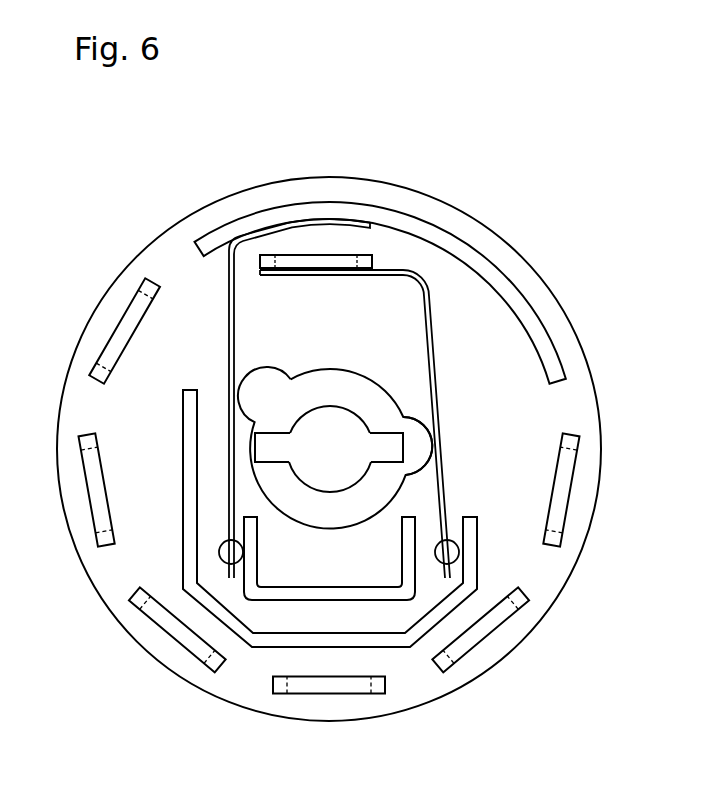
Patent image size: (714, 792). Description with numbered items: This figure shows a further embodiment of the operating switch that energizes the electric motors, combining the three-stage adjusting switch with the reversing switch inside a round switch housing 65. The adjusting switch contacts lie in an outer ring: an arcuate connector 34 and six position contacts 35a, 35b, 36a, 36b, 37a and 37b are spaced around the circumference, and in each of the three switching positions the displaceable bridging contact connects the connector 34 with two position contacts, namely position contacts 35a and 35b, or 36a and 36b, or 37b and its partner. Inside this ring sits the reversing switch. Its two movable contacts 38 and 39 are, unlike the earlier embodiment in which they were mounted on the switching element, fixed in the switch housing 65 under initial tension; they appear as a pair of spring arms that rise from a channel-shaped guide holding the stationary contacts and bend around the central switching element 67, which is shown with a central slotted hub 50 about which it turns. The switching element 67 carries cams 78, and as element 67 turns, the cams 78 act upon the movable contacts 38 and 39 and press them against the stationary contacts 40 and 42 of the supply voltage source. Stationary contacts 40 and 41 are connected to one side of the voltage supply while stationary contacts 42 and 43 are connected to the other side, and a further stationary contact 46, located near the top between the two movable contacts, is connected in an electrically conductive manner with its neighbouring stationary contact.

The connector 34 is at (483, 273).
The position contact 35a is at (562, 510).
The position contact 35b is at (185, 630).
The position contact 36a is at (483, 627).
The position contact 36b is at (100, 500).
The position contact 37a is at (327, 684).
The position contact 37b is at (112, 346).
The movable contact 38 is at (432, 368).
The movable contact 39 is at (232, 352).
The stationary contact 40 is at (250, 570).
The stationary contact 41 is at (407, 558).
The stationary contact 42 is at (468, 562).
The stationary contact 43 is at (192, 510).
The stationary contact 46 is at (324, 270).
The shaft boss with slot 50 is at (327, 425).
The switch housing 65 is at (415, 672).
The switching element 67 is at (373, 405).
The cam 78 is at (421, 448).